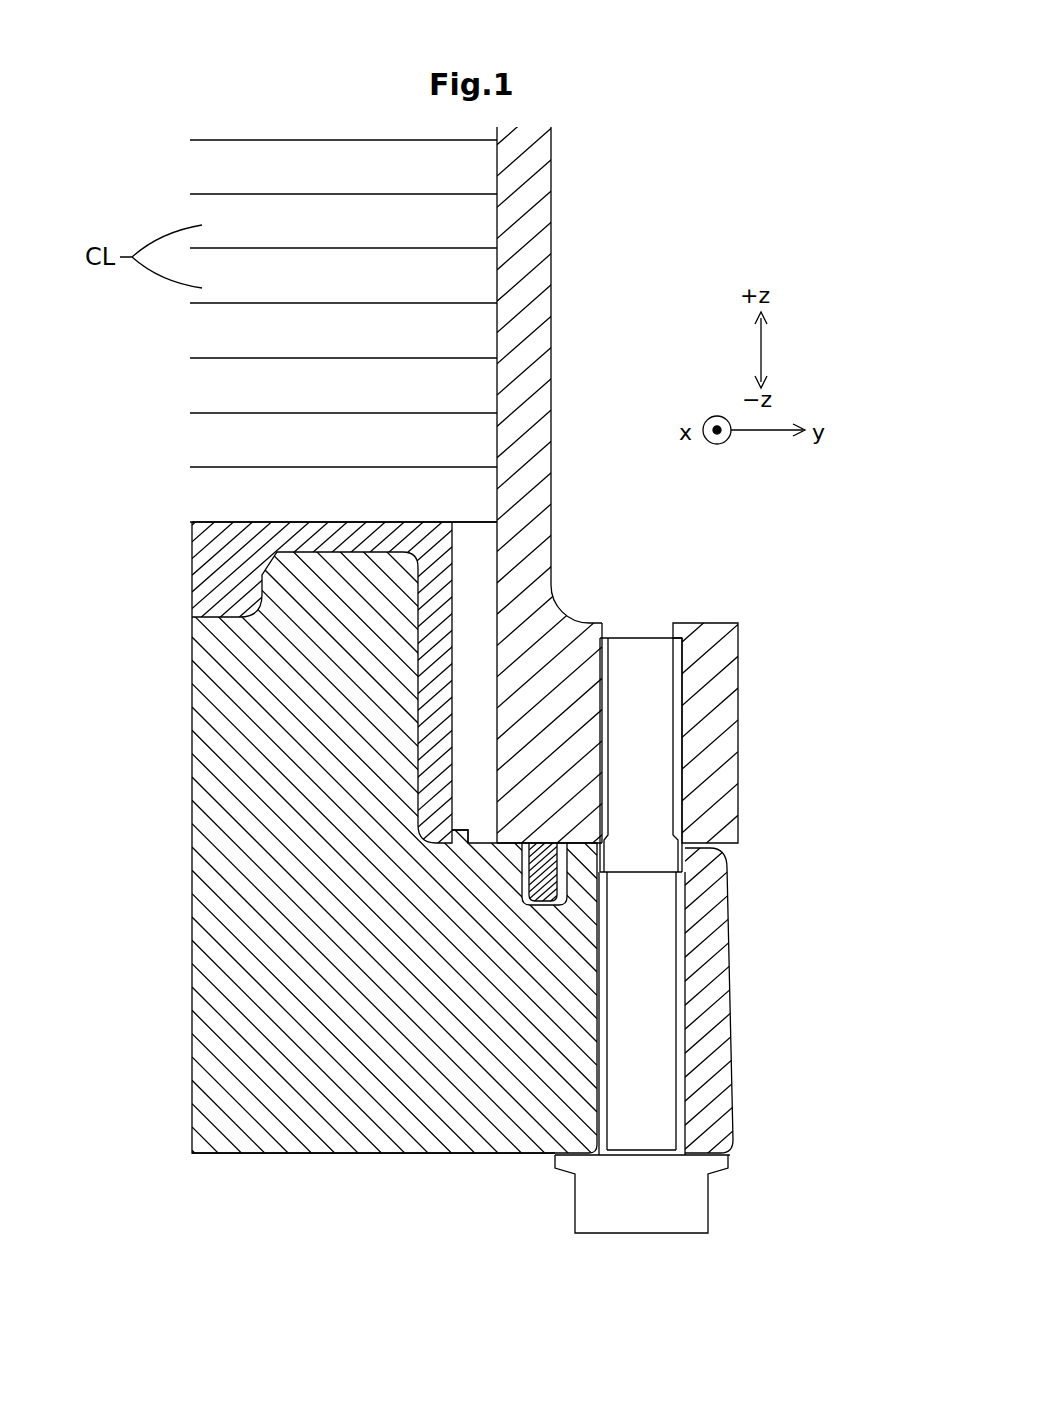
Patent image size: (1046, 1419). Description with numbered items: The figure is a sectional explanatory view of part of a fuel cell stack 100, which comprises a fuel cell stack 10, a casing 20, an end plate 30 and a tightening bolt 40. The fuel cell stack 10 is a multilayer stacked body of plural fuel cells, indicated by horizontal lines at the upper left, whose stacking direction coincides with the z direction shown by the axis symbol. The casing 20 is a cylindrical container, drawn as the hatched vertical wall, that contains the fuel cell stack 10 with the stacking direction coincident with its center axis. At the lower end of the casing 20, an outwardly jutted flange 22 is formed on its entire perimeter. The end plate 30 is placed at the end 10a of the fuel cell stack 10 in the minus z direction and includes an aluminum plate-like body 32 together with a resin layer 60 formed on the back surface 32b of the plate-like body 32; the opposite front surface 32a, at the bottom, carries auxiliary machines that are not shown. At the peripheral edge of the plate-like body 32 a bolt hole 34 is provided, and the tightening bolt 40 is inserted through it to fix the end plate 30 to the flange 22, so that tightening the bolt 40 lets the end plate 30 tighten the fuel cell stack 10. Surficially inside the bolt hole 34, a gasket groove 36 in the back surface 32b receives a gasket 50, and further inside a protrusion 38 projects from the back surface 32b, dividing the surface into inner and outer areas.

The fuel cell stack 100 is at (656, 170).
The fuel cell stack 10 is at (148, 428).
The end 10a is at (488, 538).
The casing 20 is at (552, 258).
The resin layer 60 is at (453, 594).
The protrusion 38 is at (462, 830).
The flange 22 is at (738, 667).
The gasket 50 is at (545, 843).
The gasket groove 36 is at (562, 843).
The bolt hole 34 is at (686, 922).
The tightening bolt 40 is at (660, 982).
The plate-like body 32 is at (220, 906).
The back surface 32b is at (222, 616).
The front surface 32a is at (277, 1154).
The end plate 30 is at (400, 1137).